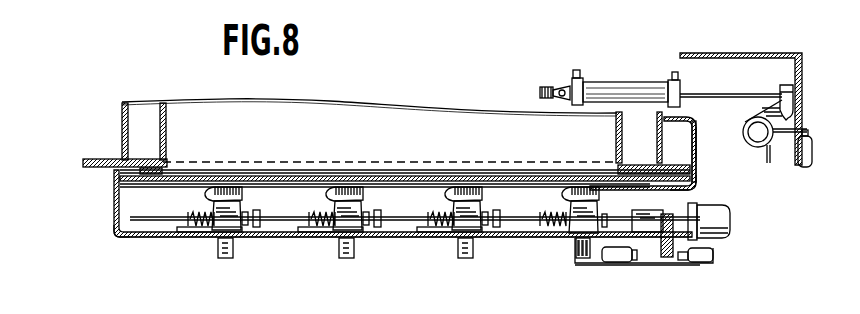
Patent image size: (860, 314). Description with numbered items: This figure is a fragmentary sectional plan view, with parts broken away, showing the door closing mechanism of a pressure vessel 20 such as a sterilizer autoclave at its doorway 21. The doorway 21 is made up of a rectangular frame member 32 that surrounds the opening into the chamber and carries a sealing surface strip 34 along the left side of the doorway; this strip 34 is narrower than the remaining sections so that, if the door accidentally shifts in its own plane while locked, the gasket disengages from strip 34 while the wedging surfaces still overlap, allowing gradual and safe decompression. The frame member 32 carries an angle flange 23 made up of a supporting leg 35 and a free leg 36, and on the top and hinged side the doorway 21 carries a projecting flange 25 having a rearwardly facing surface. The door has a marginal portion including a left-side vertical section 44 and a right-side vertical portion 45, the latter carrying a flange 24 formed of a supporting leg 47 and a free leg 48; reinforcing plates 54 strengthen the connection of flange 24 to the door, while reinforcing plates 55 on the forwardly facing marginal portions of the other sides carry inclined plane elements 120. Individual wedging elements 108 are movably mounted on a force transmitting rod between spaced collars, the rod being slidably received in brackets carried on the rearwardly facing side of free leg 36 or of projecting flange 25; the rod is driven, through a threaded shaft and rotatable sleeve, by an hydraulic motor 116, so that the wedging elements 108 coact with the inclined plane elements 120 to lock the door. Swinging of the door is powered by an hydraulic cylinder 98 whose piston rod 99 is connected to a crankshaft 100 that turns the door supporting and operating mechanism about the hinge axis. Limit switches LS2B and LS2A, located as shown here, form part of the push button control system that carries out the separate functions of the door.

The pressure vessel 20 is at (107, 141).
The doorway structure 21 is at (73, 166).
The angle flange 23 is at (99, 229).
The angle flange 24 is at (704, 146).
The projecting flange 25 is at (672, 163).
The rectangular frame member 32 is at (97, 169).
The sealing surface strip 34 is at (142, 158).
The supporting leg 35 is at (112, 197).
The free leg 36 is at (143, 238).
The left-side vertical section 44 is at (172, 158).
The right-side vertical portion 45 is at (642, 165).
The supporting leg 47 is at (697, 159).
The free leg 48 is at (688, 113).
The reinforcing plate 54 is at (658, 197).
The reinforcing plate 55 is at (148, 188).
The hydraulic cylinder 98 is at (642, 86).
The piston rod 99 is at (717, 91).
The crankshaft 100 is at (786, 106).
The wedging element 108 is at (225, 222).
The hydraulic motor 116 is at (732, 213).
The inclined plane element 120 is at (233, 187).
The limit switch LS2B is at (617, 263).
The limit switch LS2A is at (700, 263).